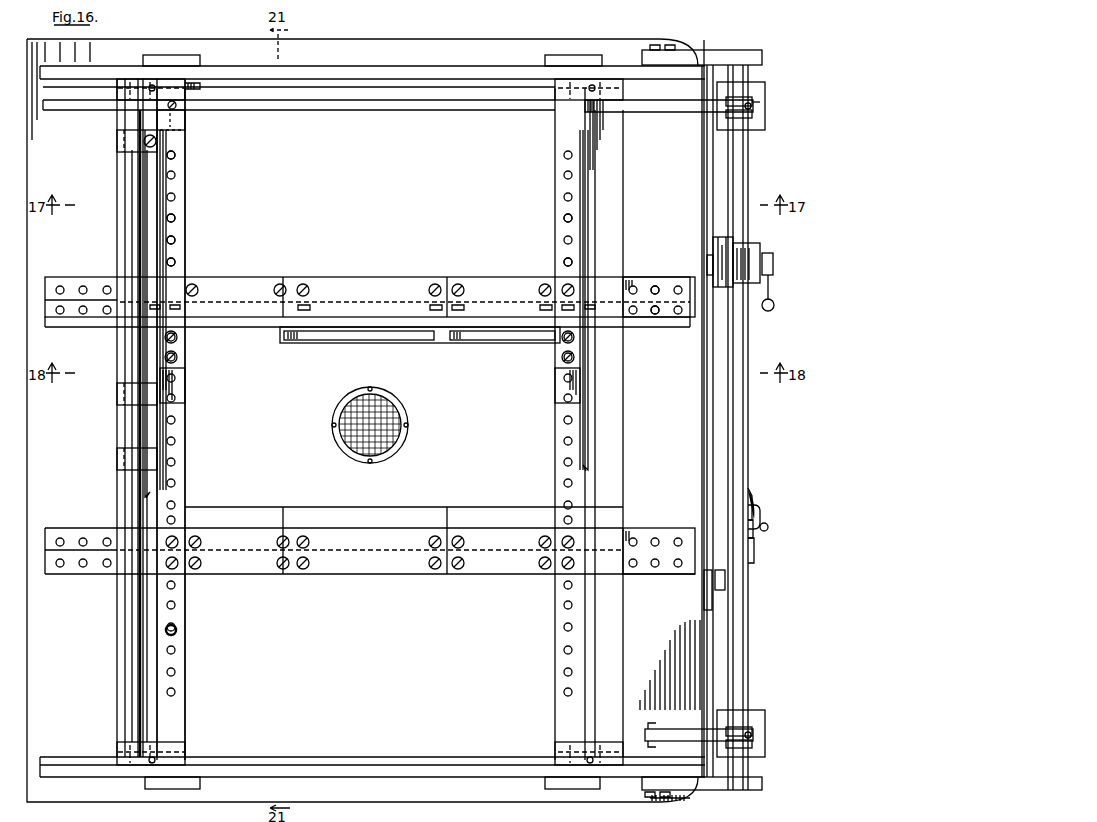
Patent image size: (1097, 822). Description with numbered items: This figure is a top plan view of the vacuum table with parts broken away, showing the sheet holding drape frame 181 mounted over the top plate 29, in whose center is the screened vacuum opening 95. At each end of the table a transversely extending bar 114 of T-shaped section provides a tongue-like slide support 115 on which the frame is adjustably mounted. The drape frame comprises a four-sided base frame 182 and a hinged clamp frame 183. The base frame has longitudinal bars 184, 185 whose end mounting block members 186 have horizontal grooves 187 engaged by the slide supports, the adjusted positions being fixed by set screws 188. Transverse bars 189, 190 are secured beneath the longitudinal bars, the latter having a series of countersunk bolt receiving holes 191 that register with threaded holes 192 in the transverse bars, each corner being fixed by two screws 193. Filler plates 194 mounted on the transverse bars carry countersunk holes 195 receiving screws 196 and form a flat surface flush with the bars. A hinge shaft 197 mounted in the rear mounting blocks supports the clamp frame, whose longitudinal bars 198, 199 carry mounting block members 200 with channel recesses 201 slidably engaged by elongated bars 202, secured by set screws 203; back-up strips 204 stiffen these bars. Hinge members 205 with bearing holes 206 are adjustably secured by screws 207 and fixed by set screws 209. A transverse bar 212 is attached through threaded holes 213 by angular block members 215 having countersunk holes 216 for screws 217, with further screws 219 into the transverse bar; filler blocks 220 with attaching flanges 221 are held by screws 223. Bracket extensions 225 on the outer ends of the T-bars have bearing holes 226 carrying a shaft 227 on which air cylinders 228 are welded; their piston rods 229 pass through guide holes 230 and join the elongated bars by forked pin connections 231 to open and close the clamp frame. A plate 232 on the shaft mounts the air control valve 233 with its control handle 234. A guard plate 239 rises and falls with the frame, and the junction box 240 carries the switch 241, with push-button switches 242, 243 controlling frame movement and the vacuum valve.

The top plate 29 is at (368, 46).
The screened vacuum opening 95 is at (392, 440).
The transversely extending bar 114 is at (432, 70).
The slide support 115 is at (460, 84).
The drape frame 181 is at (309, 95).
The base frame 182 is at (266, 500).
The clamp frame 183 is at (202, 431).
The longitudinally extending bar 184 is at (176, 598).
The longitudinally extending bar 185 is at (556, 600).
The mounting block member 186 is at (138, 82).
The horizontal groove 187 is at (140, 80).
The set screw 188 is at (155, 85).
The transverse bar 189 is at (645, 575).
The transverse bar 190 is at (655, 277).
The countersunk bolt receiving hole 191 is at (176, 630).
The threaded hole 192 is at (655, 290).
The screw 193 is at (172, 562).
The filler plate 194 is at (301, 280).
The countersunk screw receiving hole 195 is at (434, 284).
The screw 196 is at (462, 284).
The hinge shaft 197 is at (125, 244).
The longitudinally extending bar 198 is at (178, 232).
The longitudinally extending bar 199 is at (566, 231).
The mounting block member 200 is at (160, 140).
The channel recess 201 is at (182, 118).
The elongated bar 202 is at (445, 108).
The set screw 203 is at (248, 96).
The back-up strip 204 is at (160, 192).
The hinge member 205 is at (118, 144).
The bearing hole 206 is at (118, 152).
The screw 207 is at (172, 150).
The set screw 209 is at (138, 160).
The transversely extending elongated bar 212 is at (322, 330).
The threaded hole 213 is at (174, 264).
The angular block member 215 is at (180, 352).
The countersunk hole 216 is at (176, 358).
The screw 217 is at (176, 365).
The screw 219 is at (198, 286).
The filler block 220 is at (456, 346).
The attaching flange 221 is at (390, 312).
The screw 223 is at (468, 298).
The bracket extension 225 is at (718, 64).
The bearing hole 226 is at (752, 62).
The shaft 227 is at (745, 168).
The air cylinder 228 is at (766, 92).
The piston rod 229 is at (768, 106).
The guide hole 230 is at (756, 118).
The forked pin connection 231 is at (746, 118).
The plate 232 is at (716, 255).
The air control valve 233 is at (758, 250).
The control handle 234 is at (772, 290).
The guard plate 239 is at (710, 192).
The junction box 240 is at (752, 546).
The switch 241 is at (768, 527).
The push-button switch 242 is at (750, 565).
The push-button switch 243 is at (754, 486).